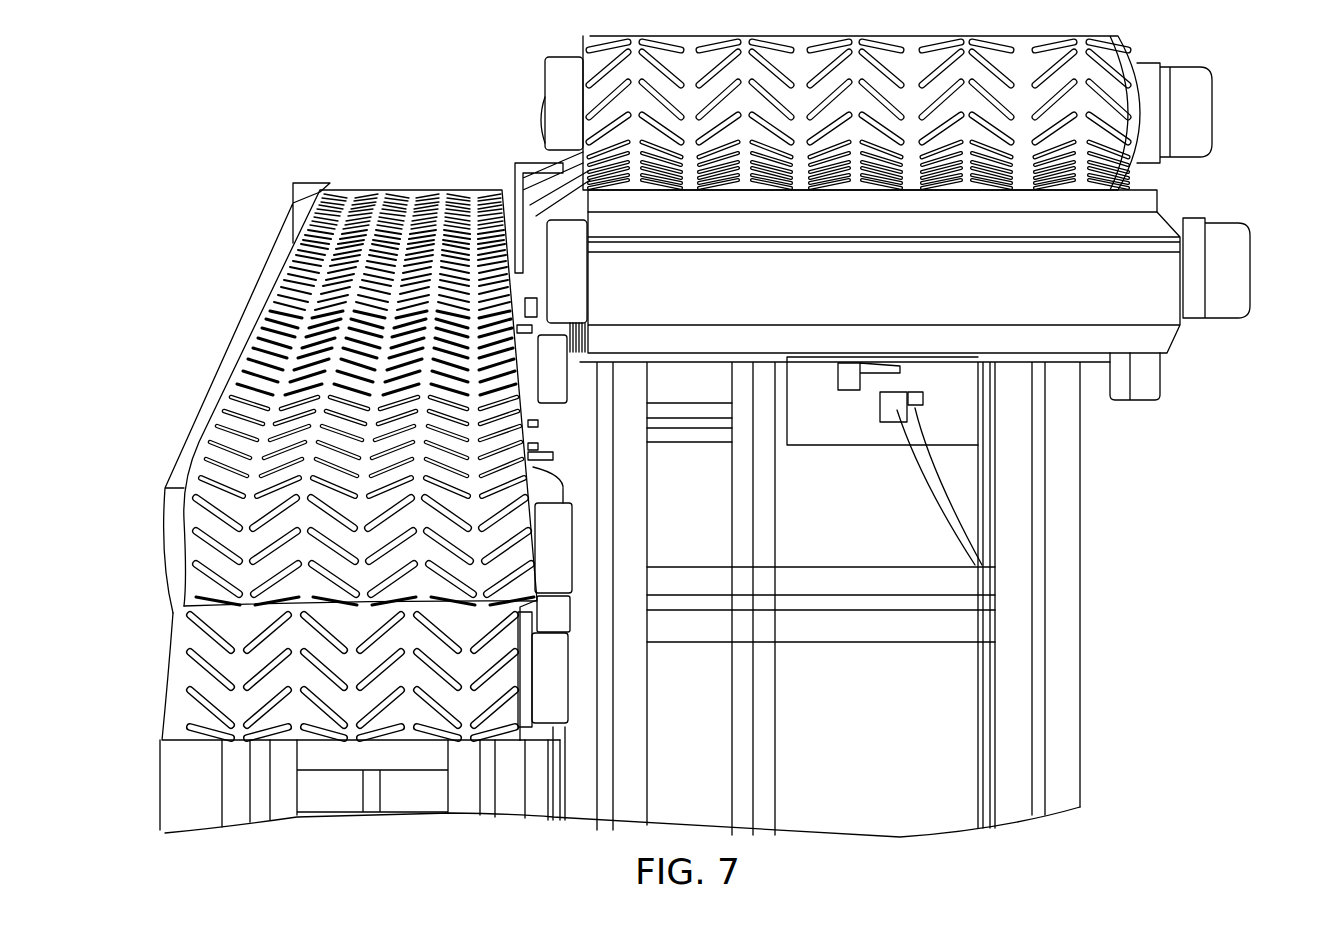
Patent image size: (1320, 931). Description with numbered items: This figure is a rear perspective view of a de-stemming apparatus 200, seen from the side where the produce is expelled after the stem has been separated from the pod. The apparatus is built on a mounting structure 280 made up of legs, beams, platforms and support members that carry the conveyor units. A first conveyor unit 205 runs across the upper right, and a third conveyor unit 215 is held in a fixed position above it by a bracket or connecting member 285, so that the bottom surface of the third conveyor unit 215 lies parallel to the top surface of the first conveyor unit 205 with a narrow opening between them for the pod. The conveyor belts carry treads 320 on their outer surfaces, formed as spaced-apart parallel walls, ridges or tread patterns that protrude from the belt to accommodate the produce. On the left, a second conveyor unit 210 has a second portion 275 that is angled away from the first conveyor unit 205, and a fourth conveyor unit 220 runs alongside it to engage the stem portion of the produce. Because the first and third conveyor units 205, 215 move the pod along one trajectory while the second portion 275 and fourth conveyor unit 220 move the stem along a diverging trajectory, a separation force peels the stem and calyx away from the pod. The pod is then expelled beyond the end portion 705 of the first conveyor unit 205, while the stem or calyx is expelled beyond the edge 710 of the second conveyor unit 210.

The de-stemming apparatus 200 is at (231, 121).
The first conveyor unit 205 is at (1168, 326).
The second conveyor unit 210 is at (537, 655).
The third conveyor unit 215 is at (1203, 112).
The fourth conveyor unit 220 is at (255, 325).
The second portion of the second conveyor unit 275 is at (520, 732).
The mounting structure 280 is at (508, 798).
The connecting member 285 is at (523, 172).
The treads 320 is at (598, 62).
The end portion of the first conveyor unit 705 is at (1152, 220).
The edge of the second conveyor unit 710 is at (520, 680).